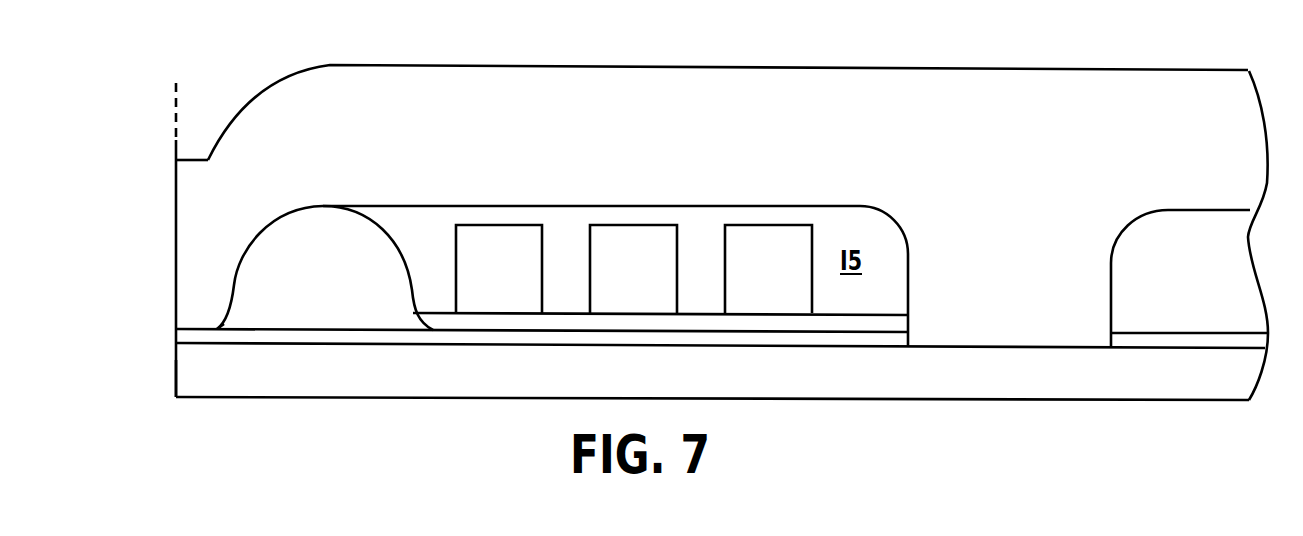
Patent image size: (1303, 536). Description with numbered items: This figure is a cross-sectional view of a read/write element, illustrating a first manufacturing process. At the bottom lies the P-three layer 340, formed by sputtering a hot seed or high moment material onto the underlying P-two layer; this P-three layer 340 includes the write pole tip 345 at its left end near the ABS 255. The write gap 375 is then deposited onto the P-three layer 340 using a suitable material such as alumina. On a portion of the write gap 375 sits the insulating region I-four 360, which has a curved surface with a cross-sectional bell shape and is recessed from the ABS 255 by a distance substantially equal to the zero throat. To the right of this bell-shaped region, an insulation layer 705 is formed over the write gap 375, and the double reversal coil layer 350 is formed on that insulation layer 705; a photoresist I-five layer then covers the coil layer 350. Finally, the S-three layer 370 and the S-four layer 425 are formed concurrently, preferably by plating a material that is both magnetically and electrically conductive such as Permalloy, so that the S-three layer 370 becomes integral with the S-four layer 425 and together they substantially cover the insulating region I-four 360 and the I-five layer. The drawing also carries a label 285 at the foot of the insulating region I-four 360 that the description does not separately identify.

The ABS 255 is at (177, 120).
The S3 layer 370 is at (177, 233).
The edge of insulator layer 285 is at (212, 323).
The write gap 375 is at (177, 337).
The write pole tip 345 is at (162, 379).
The insulating region I4 360 is at (325, 268).
The double reversal coil layer 350 is at (505, 223).
The S4 layer 425 is at (712, 112).
The insulation layer 705 is at (887, 325).
The P3 layer 340 is at (720, 371).